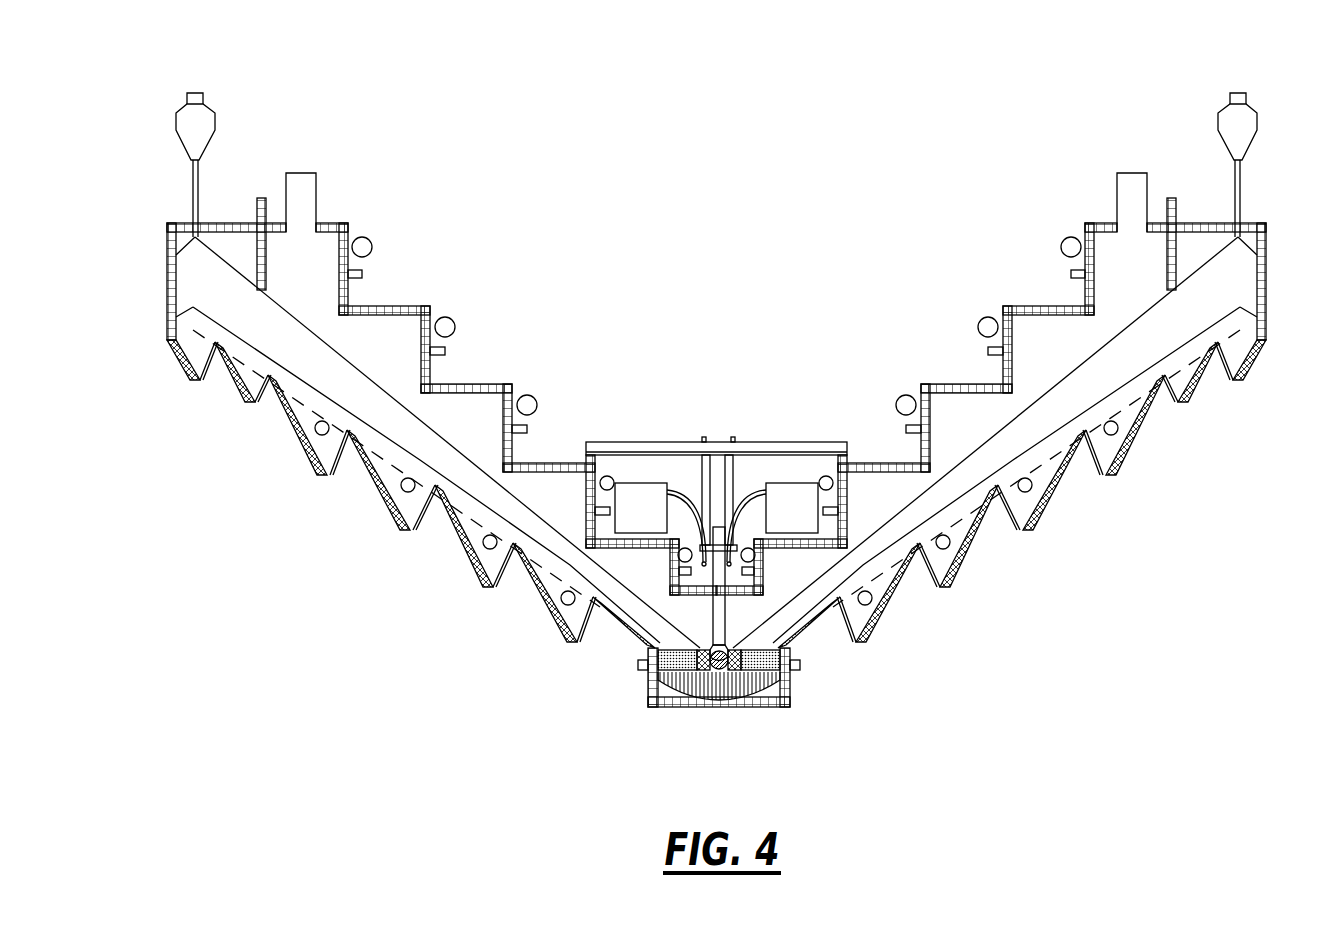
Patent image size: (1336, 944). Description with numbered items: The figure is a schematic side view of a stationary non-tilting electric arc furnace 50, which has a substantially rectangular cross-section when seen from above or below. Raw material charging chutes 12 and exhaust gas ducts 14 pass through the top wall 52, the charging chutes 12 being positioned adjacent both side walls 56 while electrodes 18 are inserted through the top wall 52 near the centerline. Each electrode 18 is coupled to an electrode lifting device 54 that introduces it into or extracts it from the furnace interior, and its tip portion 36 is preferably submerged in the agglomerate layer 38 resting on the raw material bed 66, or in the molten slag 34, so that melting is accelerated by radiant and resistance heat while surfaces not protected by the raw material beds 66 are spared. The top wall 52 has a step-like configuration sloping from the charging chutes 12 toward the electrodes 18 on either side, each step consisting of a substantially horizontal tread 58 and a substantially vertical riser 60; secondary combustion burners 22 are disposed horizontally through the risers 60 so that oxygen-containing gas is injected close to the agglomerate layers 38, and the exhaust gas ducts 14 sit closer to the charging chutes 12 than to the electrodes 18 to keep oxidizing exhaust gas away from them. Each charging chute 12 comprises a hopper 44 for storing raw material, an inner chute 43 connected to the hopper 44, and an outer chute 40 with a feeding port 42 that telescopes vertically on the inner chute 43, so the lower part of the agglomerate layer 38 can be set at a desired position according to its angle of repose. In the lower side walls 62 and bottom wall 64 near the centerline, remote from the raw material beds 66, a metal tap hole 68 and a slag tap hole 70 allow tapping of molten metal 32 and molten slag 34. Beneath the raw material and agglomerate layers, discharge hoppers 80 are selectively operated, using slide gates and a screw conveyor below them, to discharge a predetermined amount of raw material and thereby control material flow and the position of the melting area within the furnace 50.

The raw material charging chute 12 is at (214, 122).
The exhaust gas duct 14 is at (317, 200).
The electrode 18 is at (723, 653).
The secondary combustion burner 22 is at (364, 270).
The molten metal 32 is at (703, 684).
The molten slag 34 is at (768, 678).
The tip portion 36 is at (722, 668).
The agglomerate layer 38 is at (349, 362).
The outer chute 40 is at (198, 218).
The feeding port 42 is at (195, 243).
The inner chute 43 is at (197, 182).
The hopper 44 is at (192, 113).
The furnace 50 is at (852, 208).
The top wall 52 is at (425, 298).
The electrode lifting device 54 is at (670, 441).
The side wall 56 is at (164, 322).
The tread 58 is at (480, 382).
The riser 60 is at (521, 394).
The side wall 62 is at (646, 695).
The bottom wall 64 is at (723, 710).
The raw material bed 66 is at (318, 375).
The metal tap hole 68 is at (797, 664).
The slag tap hole 70 is at (646, 667).
The discharge hopper 80 is at (535, 600).